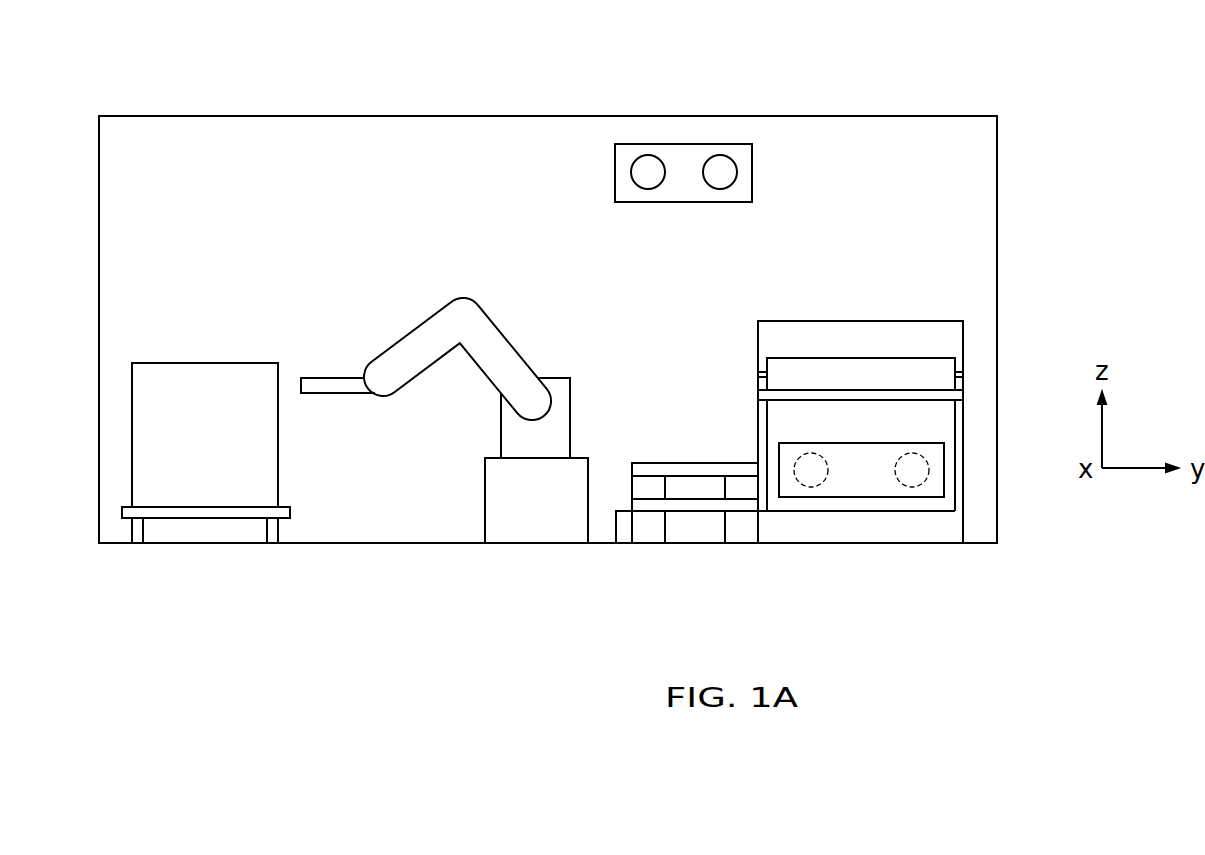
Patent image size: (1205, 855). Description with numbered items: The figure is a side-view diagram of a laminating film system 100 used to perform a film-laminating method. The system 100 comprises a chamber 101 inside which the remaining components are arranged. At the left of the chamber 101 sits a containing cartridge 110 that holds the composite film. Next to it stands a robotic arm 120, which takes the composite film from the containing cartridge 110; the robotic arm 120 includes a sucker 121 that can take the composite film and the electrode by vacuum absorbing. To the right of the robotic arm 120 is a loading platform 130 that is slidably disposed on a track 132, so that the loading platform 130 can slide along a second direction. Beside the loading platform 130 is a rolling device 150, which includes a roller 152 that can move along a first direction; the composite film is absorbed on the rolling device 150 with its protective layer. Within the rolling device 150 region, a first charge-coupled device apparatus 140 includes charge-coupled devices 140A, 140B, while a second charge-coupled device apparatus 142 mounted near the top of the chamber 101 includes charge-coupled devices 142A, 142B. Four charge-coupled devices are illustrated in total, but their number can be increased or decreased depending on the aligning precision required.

The system 100 is at (997, 70).
The chamber 101 is at (258, 116).
The containing cartridge 110 is at (227, 449).
The robotic arm 120 is at (408, 345).
The sucker 121 is at (328, 385).
The loading platform 130 is at (694, 473).
The track 132 is at (620, 520).
The first charge-coupled device apparatus 140 is at (862, 483).
The charge-coupled device 140A is at (811, 475).
The charge-coupled device 140B is at (912, 475).
The second charge-coupled device apparatus 142 is at (681, 144).
The charge-coupled device 142A is at (642, 172).
The charge-coupled device 142B is at (727, 172).
The rolling device 150 is at (818, 330).
The roller 152 is at (890, 368).